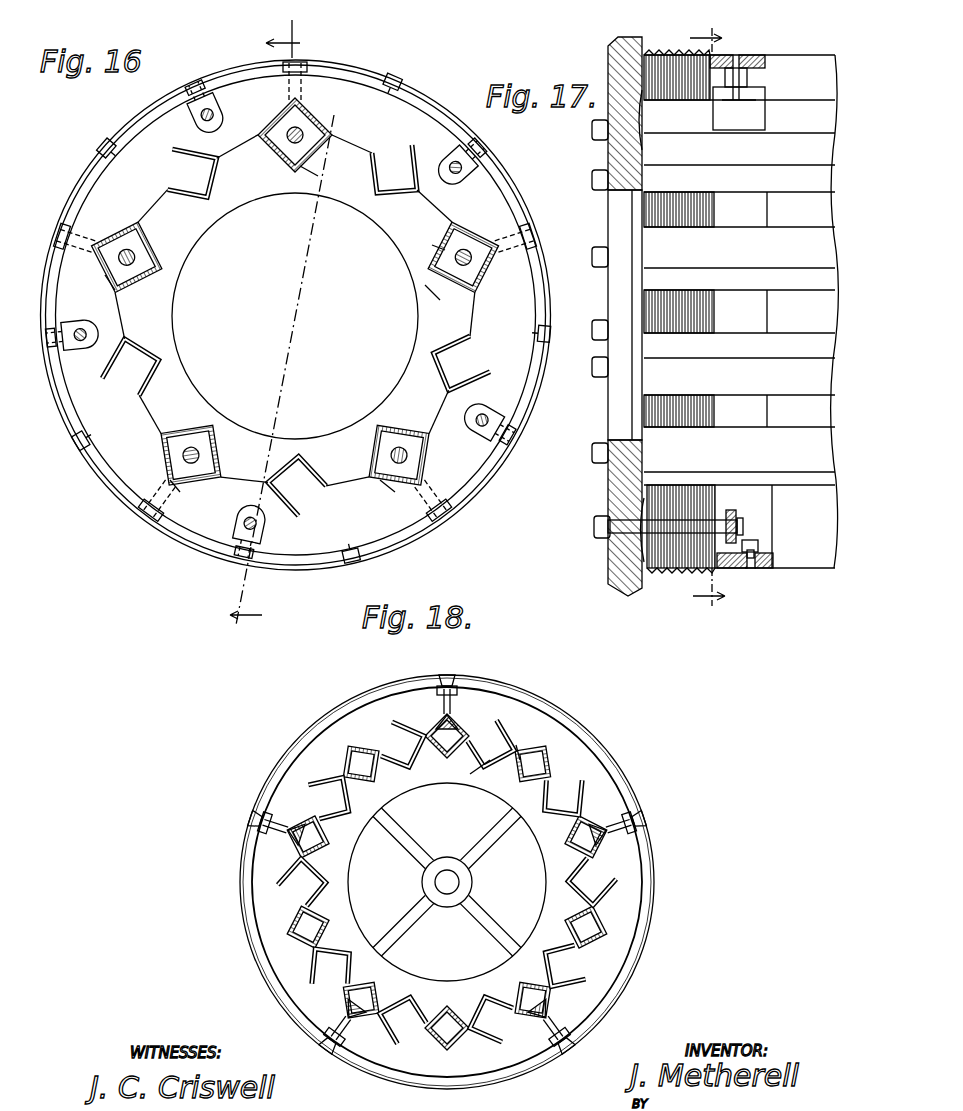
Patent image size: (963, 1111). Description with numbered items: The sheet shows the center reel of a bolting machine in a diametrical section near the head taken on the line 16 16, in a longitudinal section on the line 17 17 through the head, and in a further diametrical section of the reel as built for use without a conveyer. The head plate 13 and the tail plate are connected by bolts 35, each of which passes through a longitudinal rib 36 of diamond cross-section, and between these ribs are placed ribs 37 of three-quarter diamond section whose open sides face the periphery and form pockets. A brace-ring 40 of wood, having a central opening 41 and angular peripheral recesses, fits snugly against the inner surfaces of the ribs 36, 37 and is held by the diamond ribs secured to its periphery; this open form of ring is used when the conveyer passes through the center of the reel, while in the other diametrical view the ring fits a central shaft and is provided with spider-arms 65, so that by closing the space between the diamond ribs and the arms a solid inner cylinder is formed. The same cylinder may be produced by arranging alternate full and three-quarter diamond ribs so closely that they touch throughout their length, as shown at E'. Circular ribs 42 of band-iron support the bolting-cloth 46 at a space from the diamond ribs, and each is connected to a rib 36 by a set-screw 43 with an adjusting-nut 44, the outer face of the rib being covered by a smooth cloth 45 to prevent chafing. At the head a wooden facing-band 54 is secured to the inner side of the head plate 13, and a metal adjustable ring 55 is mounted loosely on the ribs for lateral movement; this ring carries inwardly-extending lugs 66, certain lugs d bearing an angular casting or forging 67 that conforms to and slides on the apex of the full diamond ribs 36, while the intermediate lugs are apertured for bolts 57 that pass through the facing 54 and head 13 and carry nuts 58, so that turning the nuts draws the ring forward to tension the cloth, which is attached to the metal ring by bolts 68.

In FIG. 17, the head plate 13 is at (616, 494).
In FIG. 17, the section line 16 16 is at (710, 324).
In FIG. 16, the section line 17 17 is at (281, 338).
In FIG. 16, the bolts 35 is at (290, 150).
In FIG. 16, the rib 36 is at (372, 162).
In FIG. 17, the rib 36 is at (739, 356).
In FIG. 18, the rib 36 is at (446, 882).
In FIG. 16, the ribs 37 is at (148, 290).
In FIG. 17, the ribs 37 is at (741, 311).
In FIG. 16, the brace-rings 40 is at (425, 243).
In FIG. 18, the brace-rings 40 is at (470, 775).
In FIG. 16, the central opening 41 is at (295, 316).
In FIG. 18, the circular ribs 42 is at (614, 763).
In FIG. 18, the set-screws 43 is at (462, 700).
In FIG. 18, the adjusting-nut 44 is at (446, 882).
In FIG. 18, the cloth 45 is at (655, 900).
In FIG. 17, the bolting-cloth 46 is at (668, 596).
In FIG. 17, the facing-band 54 is at (635, 45).
In FIG. 16, the adjustable ring 55 is at (548, 292).
In FIG. 17, the adjustable ring 55 is at (762, 55).
In FIG. 16, the bolts 57 is at (282, 112).
In FIG. 17, the bolts 57 is at (722, 530).
In FIG. 17, the nuts 58 is at (604, 540).
In FIG. 18, the spider-arms 65 is at (472, 866).
In FIG. 16, the lugs 66 is at (205, 122).
In FIG. 17, the lugs 66 is at (748, 84).
In FIG. 16, the angular casting or forging 67 is at (310, 108).
In FIG. 17, the angular casting or forging 67 is at (722, 100).
In FIG. 16, the bolts 68 is at (542, 345).
In FIG. 17, the bolts 68 is at (750, 568).
In FIG. 16, the nuts a is at (283, 92).
In FIG. 16, the lugs d is at (166, 503).
In FIG. 18, the closely arranged ribs E' is at (403, 844).